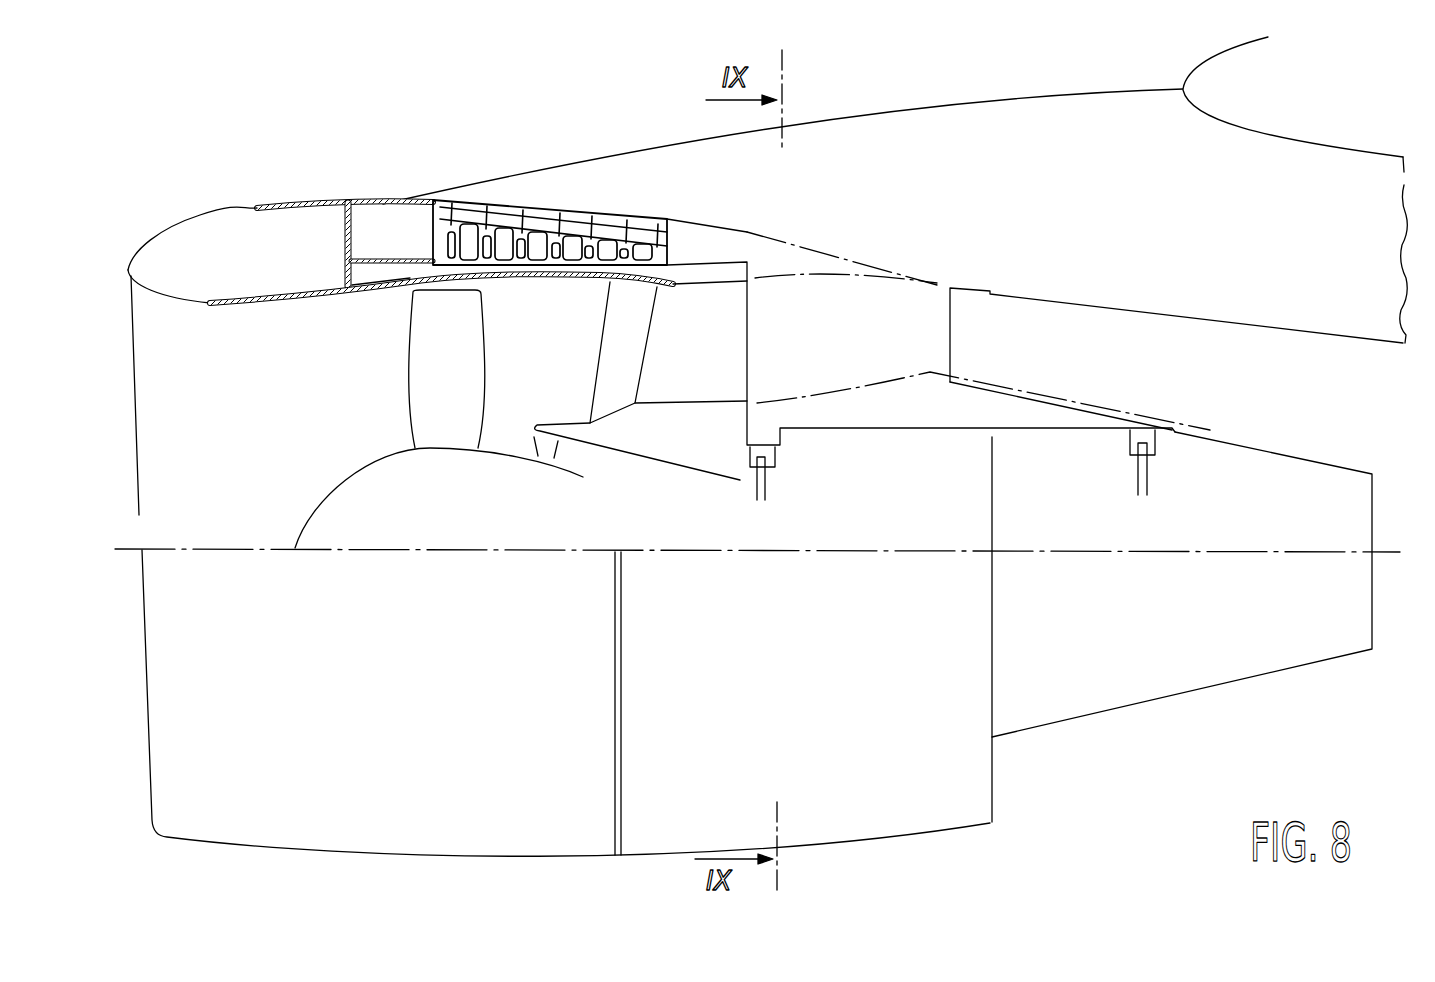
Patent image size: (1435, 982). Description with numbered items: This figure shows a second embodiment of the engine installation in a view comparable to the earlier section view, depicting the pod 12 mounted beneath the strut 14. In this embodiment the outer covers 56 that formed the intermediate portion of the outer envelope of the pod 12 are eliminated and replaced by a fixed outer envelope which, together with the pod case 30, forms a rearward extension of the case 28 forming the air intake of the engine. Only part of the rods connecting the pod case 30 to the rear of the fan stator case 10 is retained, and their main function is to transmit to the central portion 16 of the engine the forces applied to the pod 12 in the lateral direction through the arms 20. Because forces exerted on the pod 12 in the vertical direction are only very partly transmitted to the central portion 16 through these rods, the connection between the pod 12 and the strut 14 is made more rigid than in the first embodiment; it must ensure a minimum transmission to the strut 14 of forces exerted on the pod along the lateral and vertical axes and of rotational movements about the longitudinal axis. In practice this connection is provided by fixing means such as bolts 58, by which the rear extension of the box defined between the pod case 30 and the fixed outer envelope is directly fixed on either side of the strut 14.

The fan stator case 10 is at (554, 284).
The pod 12 is at (322, 194).
The strut 14 is at (1043, 150).
The central portion 16 is at (694, 400).
The arms 20 is at (613, 383).
The case 28 is at (182, 245).
The pod case 30 is at (414, 257).
The outer covers 56 is at (366, 200).
The bolts 58 is at (630, 230).